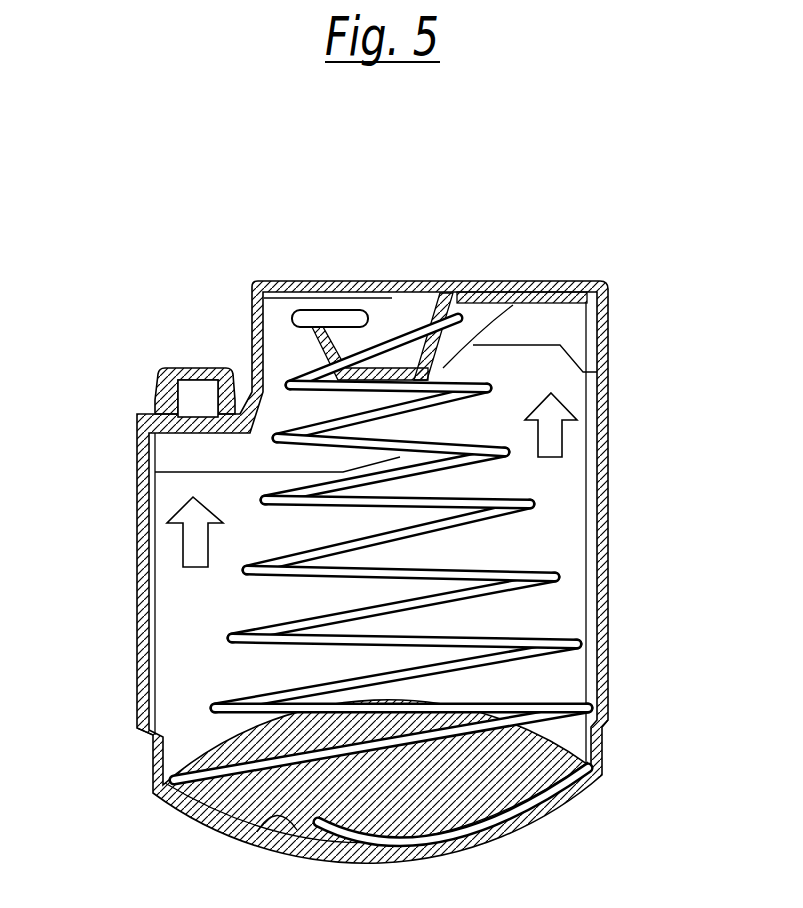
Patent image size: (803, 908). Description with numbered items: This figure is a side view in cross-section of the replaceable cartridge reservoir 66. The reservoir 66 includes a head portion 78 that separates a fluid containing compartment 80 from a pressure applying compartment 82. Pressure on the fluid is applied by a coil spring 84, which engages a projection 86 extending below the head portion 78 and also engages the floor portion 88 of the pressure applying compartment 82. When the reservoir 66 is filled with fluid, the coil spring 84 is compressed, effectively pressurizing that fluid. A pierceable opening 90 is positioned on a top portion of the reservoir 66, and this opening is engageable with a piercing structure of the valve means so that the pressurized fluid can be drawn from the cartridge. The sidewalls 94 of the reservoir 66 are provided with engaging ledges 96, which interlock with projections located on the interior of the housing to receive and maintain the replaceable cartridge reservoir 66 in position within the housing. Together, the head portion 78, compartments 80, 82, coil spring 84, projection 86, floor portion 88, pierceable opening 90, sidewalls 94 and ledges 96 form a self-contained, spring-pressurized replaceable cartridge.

The replaceable cartridge reservoir 66 is at (605, 390).
The head portion 78 is at (603, 307).
The fluid containing compartment 80 is at (384, 318).
The pressure applying compartment 82 is at (582, 541).
The coil spring 84 is at (582, 661).
The projection 86 is at (527, 280).
The floor portion 88 is at (263, 813).
The pierceable opening 90 is at (163, 370).
The sidewalls 94 is at (607, 481).
The engaging ledges 96 is at (608, 727).